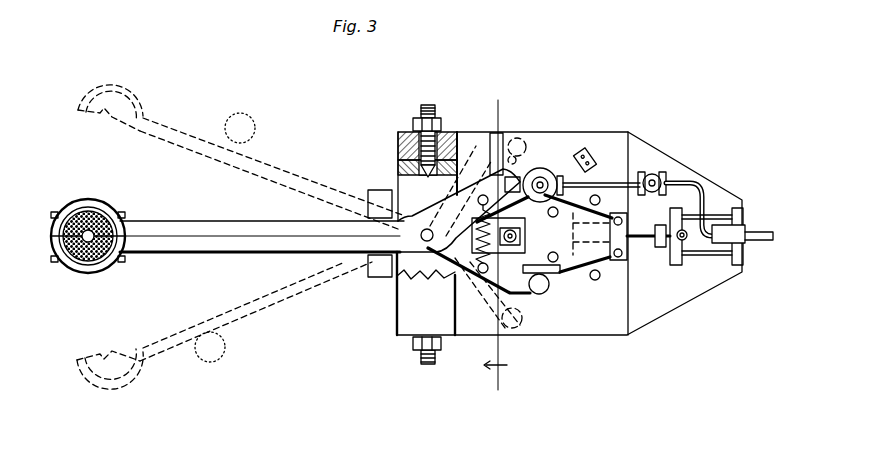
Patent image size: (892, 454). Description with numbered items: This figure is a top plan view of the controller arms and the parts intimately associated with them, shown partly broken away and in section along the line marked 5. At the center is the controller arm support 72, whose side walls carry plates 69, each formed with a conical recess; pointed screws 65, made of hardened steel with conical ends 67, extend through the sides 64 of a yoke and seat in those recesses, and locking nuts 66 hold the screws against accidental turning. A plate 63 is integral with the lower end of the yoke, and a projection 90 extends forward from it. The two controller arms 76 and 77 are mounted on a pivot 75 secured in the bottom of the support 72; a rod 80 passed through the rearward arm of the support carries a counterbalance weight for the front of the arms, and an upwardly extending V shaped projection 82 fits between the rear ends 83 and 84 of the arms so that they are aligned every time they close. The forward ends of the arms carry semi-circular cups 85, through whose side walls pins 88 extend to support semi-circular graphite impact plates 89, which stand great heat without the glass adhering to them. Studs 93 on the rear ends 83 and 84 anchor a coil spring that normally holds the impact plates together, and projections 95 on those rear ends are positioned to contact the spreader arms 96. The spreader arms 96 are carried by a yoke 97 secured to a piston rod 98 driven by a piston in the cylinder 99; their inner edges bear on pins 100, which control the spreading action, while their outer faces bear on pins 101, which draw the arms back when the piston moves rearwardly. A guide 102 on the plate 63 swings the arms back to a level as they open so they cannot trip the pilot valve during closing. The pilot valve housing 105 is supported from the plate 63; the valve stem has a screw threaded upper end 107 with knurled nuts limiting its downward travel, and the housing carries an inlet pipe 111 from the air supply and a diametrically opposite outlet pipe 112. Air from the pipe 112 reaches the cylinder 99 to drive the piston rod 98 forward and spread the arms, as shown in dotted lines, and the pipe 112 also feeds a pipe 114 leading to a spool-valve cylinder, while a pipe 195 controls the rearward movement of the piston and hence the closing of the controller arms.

The section line 5- 5 is at (495, 238).
The plate 63 is at (613, 329).
The sides of the yoke 64 is at (398, 137).
The pointed screws 65 is at (427, 105).
The locking nuts 66 is at (440, 121).
The conical ends 67 is at (445, 162).
The plate 69 is at (398, 172).
The controller arm support 72 is at (398, 184).
The pivot 75 is at (426, 243).
The controller arm 76 is at (210, 253).
The controller arm 77 is at (211, 234).
The rod 80 is at (522, 237).
The V shaped projection 82 is at (426, 293).
The rear end of controller arm 83 is at (455, 211).
The rear end of controller arm 84 is at (482, 274).
The cups 85 is at (96, 205).
The pins 88 is at (53, 212).
The impact plates 89 is at (100, 219).
The projection 90 is at (368, 270).
The studs 93 is at (463, 265).
The projections 95 is at (538, 296).
The spreader arms 96 is at (557, 207).
The yoke 97 is at (630, 243).
The piston rod 98 is at (645, 242).
The cylinder 99 is at (712, 250).
The pins 100 is at (581, 200).
The pins 101 is at (600, 202).
The guide 102 is at (515, 138).
The housing of the pilot valve 105 is at (592, 150).
The screw threaded upper end of valve stem 107 is at (553, 172).
The pipe 111 is at (541, 168).
The pipe 112 is at (693, 182).
The pipe 114 is at (765, 231).
The pipe 195 is at (687, 243).